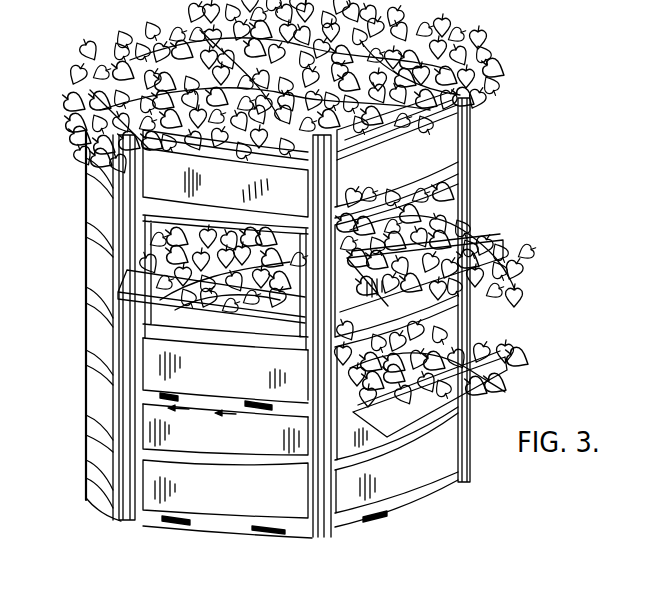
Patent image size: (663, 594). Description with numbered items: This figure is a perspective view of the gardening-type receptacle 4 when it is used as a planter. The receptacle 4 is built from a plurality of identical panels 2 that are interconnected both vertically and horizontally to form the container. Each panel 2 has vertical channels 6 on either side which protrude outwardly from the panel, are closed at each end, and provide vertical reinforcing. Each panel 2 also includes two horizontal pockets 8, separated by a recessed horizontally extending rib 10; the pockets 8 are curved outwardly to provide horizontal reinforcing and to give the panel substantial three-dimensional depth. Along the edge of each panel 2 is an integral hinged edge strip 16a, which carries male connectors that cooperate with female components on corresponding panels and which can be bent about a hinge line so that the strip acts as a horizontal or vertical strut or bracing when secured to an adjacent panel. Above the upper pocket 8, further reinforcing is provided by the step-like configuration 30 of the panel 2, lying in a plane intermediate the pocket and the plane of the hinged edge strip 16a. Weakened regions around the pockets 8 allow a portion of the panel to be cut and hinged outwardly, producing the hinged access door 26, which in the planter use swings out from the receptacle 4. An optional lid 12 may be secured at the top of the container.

The panel 2 is at (175, 185).
The gardening-type receptacle 4 is at (475, 172).
The vertical channel 6 is at (130, 513).
The horizontal pocket 8 is at (238, 456).
The recessed horizontally extending rib 10 is at (209, 405).
The lid 12 is at (601, 592).
The hinged edge strip 16a is at (458, 97).
The hinged access door 26 is at (500, 256).
The step-like configuration 30 is at (433, 129).